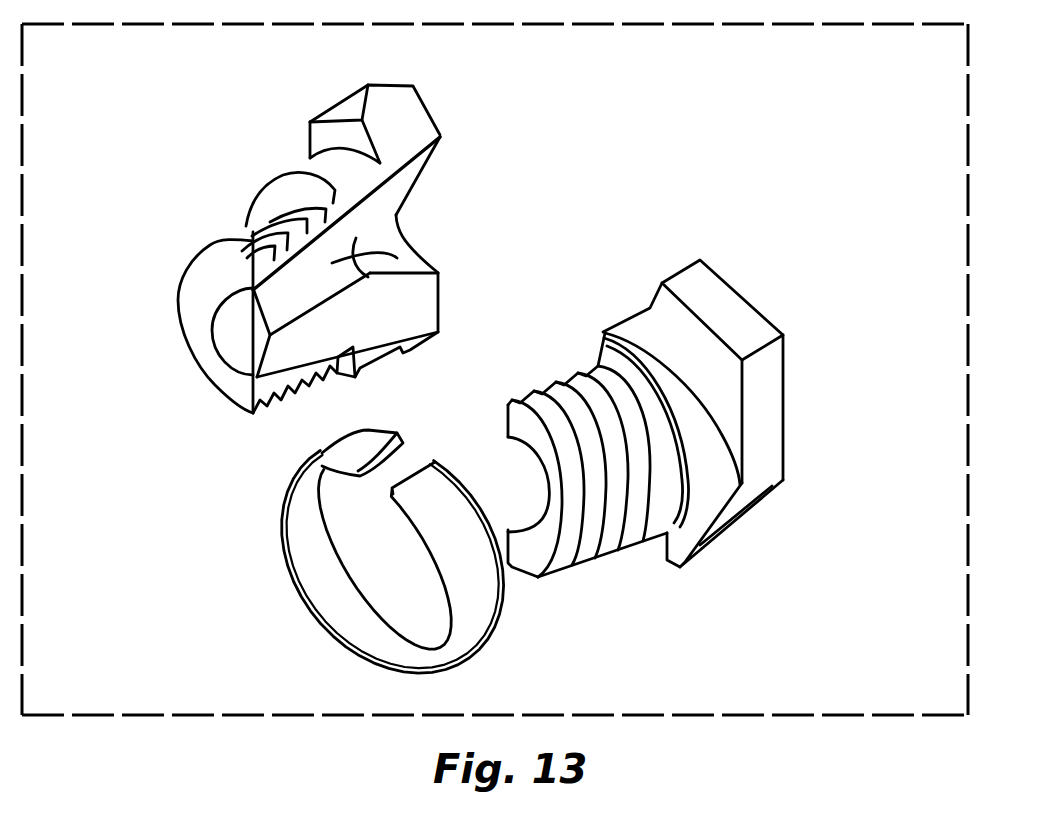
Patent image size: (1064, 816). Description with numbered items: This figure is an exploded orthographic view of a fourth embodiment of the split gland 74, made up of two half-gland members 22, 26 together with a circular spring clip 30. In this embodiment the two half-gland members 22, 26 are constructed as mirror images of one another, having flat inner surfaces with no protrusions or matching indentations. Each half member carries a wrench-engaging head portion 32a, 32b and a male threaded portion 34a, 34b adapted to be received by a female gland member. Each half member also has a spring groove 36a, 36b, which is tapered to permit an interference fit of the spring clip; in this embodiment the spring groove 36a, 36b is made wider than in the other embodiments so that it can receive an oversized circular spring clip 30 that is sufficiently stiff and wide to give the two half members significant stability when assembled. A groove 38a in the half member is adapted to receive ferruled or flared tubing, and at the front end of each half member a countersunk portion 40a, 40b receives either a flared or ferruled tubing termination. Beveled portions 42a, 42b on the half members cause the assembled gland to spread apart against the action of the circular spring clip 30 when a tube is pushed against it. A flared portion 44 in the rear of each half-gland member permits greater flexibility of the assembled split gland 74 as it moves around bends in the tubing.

The half-gland member 22 is at (650, 528).
The half-gland member 26 is at (213, 353).
The circular spring clip 30 is at (295, 588).
The wrench-engaging head portion 32a is at (327, 135).
The wrench-engaging head portion 32b is at (703, 290).
The male threaded portion 34a is at (246, 226).
The male threaded portion 34b is at (578, 377).
The spring groove 36a is at (367, 367).
The spring groove 36b is at (722, 487).
The groove 38a is at (403, 233).
The countersunk portion 40a is at (237, 303).
The countersunk portion 40b is at (528, 517).
The beveled portion 42a is at (400, 108).
The beveled portion 42b is at (677, 277).
The flared portion 44 is at (400, 260).
The split gland of this embodiment 74 is at (970, 494).